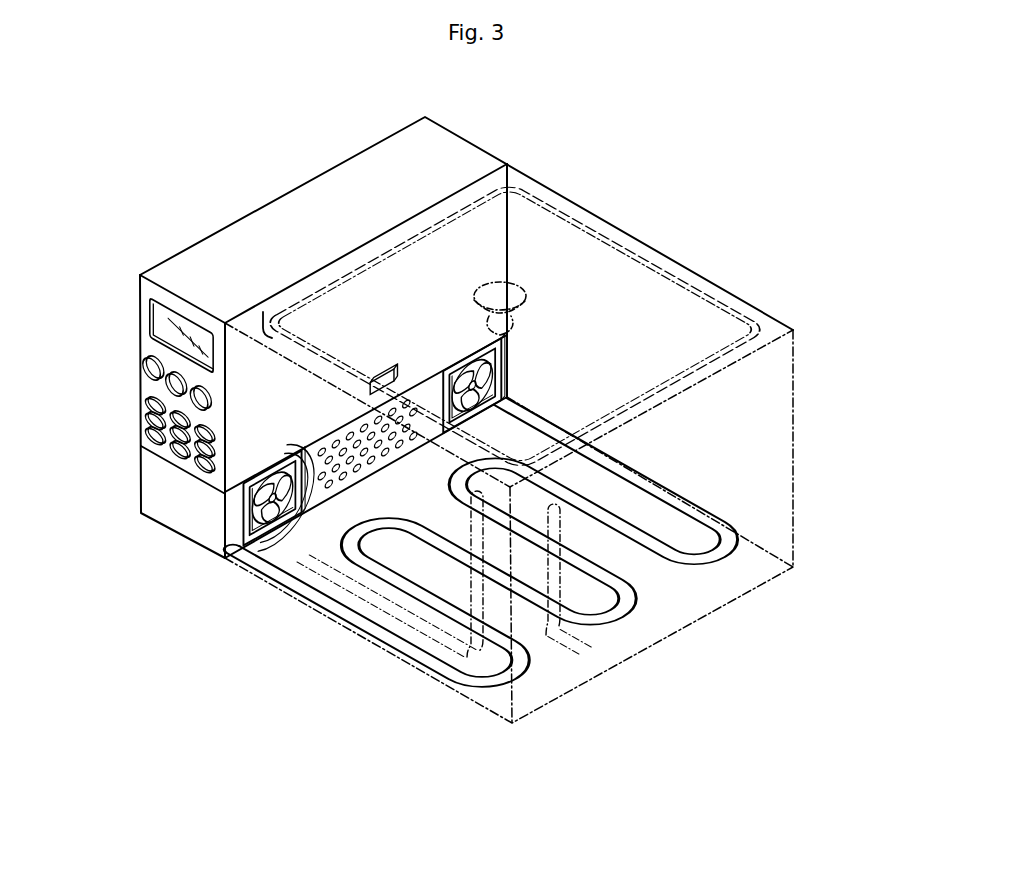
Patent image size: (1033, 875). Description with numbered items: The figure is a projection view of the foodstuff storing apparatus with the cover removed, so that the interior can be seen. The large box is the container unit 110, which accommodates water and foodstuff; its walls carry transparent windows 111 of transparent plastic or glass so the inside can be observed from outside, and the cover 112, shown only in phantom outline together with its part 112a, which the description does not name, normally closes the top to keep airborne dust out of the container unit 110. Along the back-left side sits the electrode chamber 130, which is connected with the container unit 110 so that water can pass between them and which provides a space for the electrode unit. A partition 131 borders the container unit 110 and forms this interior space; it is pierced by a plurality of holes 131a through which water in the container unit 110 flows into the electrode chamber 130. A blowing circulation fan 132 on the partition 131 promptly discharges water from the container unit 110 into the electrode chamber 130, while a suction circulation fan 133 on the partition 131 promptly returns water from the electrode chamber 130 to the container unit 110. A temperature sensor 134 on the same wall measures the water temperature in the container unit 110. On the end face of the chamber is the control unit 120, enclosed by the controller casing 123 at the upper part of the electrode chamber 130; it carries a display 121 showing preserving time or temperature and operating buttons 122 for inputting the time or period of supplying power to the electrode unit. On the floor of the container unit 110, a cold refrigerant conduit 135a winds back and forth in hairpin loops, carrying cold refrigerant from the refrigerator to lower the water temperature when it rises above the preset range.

The container unit 110 is at (668, 116).
The transparent windows 111 is at (647, 587).
The cover 112 is at (642, 272).
The handle 112a is at (507, 287).
The control unit 120 is at (146, 326).
The display 121 is at (160, 323).
The operating button 122 is at (157, 403).
The controller casing 123 is at (154, 350).
The electrode chamber 130 is at (155, 500).
The partition 131 is at (253, 547).
The holes 131a is at (352, 483).
The blowing circulation fan 132 is at (262, 500).
The suction circulation fan 133 is at (465, 382).
The temperature sensor 134 is at (385, 380).
The cold refrigerant conduit 135a is at (563, 620).